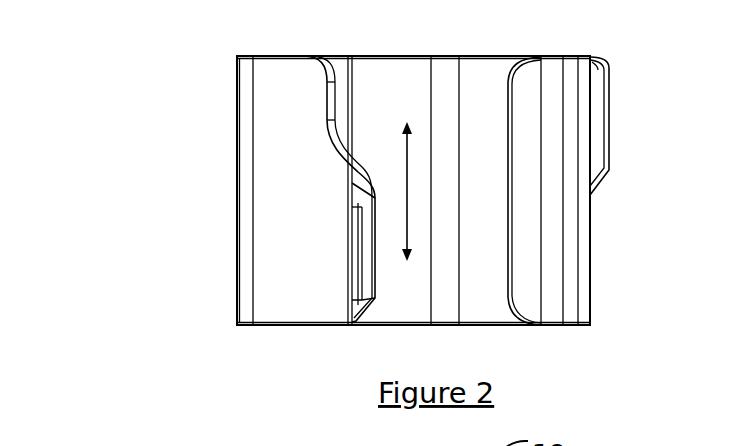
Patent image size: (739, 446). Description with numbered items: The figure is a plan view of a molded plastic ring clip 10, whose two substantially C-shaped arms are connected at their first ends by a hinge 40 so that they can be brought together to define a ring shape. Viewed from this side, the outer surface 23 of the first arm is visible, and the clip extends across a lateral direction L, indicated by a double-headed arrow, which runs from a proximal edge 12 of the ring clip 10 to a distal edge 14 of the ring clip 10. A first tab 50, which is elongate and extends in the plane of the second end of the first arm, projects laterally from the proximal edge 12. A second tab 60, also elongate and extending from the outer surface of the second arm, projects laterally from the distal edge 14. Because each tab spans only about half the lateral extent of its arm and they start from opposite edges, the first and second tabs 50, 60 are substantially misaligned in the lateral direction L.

The ring clip 10 is at (115, 70).
The proximal edge 12 is at (287, 326).
The distal edge 14 is at (348, 56).
The outer surface 23 is at (280, 190).
The hinge 40 is at (441, 70).
The first tab 50 is at (363, 222).
The second tab 60 is at (609, 118).
The lateral direction L is at (407, 205).